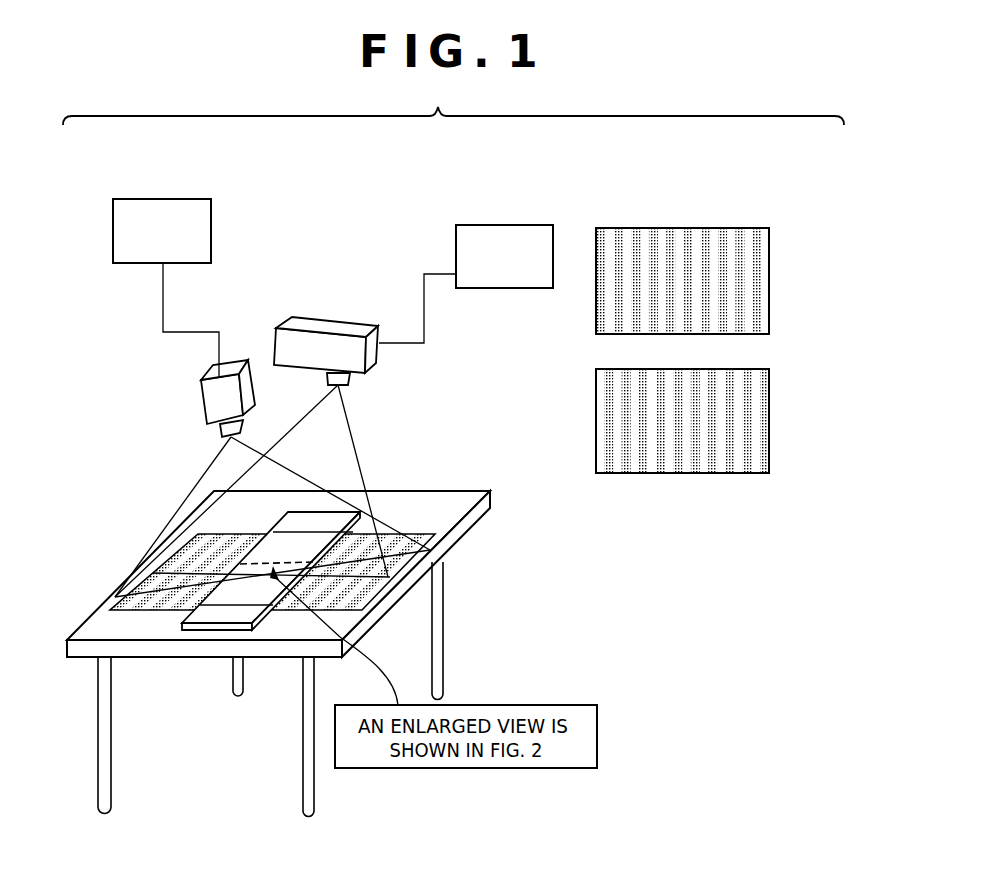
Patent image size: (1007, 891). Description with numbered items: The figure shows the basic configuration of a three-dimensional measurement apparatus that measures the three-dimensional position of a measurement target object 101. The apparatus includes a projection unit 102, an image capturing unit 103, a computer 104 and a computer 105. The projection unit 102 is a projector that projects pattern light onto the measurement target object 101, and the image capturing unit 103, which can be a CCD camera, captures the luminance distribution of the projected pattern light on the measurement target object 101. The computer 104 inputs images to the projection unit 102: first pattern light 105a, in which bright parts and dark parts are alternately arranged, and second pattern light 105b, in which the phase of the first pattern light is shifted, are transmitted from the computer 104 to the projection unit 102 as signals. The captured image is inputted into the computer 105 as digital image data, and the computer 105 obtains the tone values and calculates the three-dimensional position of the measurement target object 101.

The measurement target object 101 is at (217, 618).
The projection unit 102 is at (370, 367).
The image capturing unit 103 is at (208, 405).
The computer 104 is at (527, 225).
The computer 105 is at (185, 198).
The first pattern light 105a is at (738, 258).
The second pattern light 105b is at (745, 397).